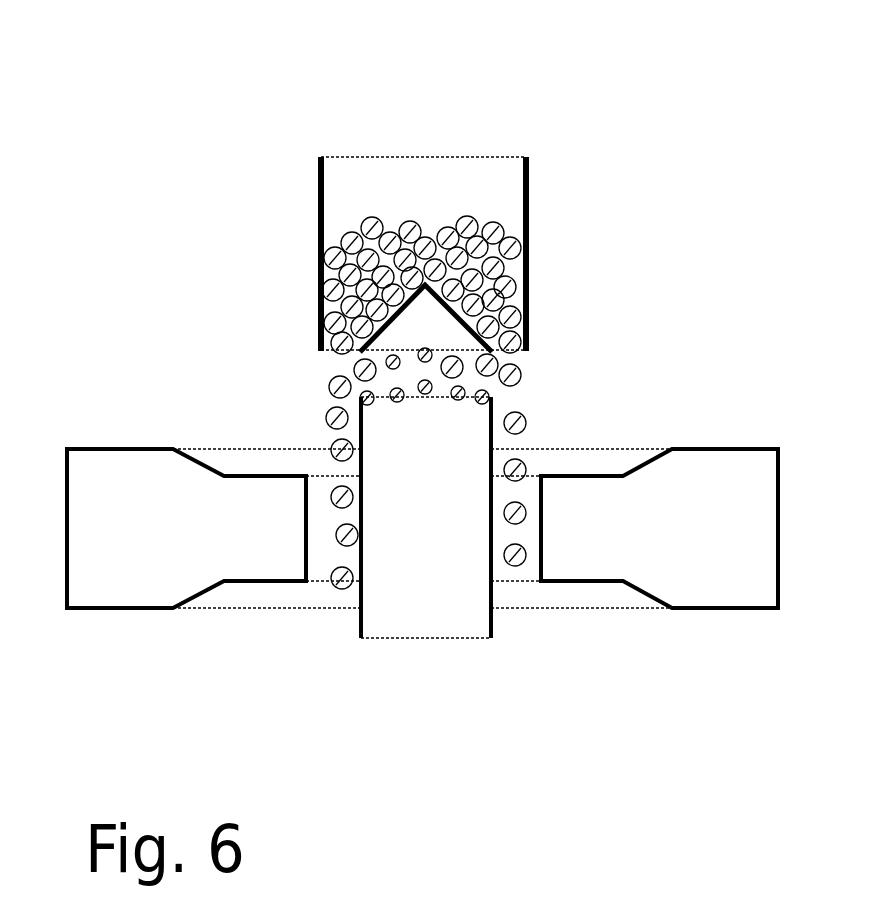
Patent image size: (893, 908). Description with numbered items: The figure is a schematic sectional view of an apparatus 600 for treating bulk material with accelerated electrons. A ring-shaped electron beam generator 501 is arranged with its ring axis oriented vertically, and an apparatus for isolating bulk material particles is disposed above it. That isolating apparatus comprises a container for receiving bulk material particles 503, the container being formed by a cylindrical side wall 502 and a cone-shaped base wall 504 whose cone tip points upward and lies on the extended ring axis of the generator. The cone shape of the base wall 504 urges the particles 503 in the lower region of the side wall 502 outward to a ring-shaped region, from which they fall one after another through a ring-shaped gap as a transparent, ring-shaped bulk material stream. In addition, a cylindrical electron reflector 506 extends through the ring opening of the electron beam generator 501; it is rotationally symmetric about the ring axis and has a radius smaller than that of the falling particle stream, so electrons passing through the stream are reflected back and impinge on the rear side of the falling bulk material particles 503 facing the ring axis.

The apparatus 600 is at (570, 110).
The ring-shaped electron beam generator 501 is at (737, 445).
The cylindrical side wall 502 is at (532, 190).
The bulk material particles 503 is at (525, 370).
The cone-shaped base wall 504 is at (525, 287).
The cylindrical electron reflector 506 is at (492, 620).